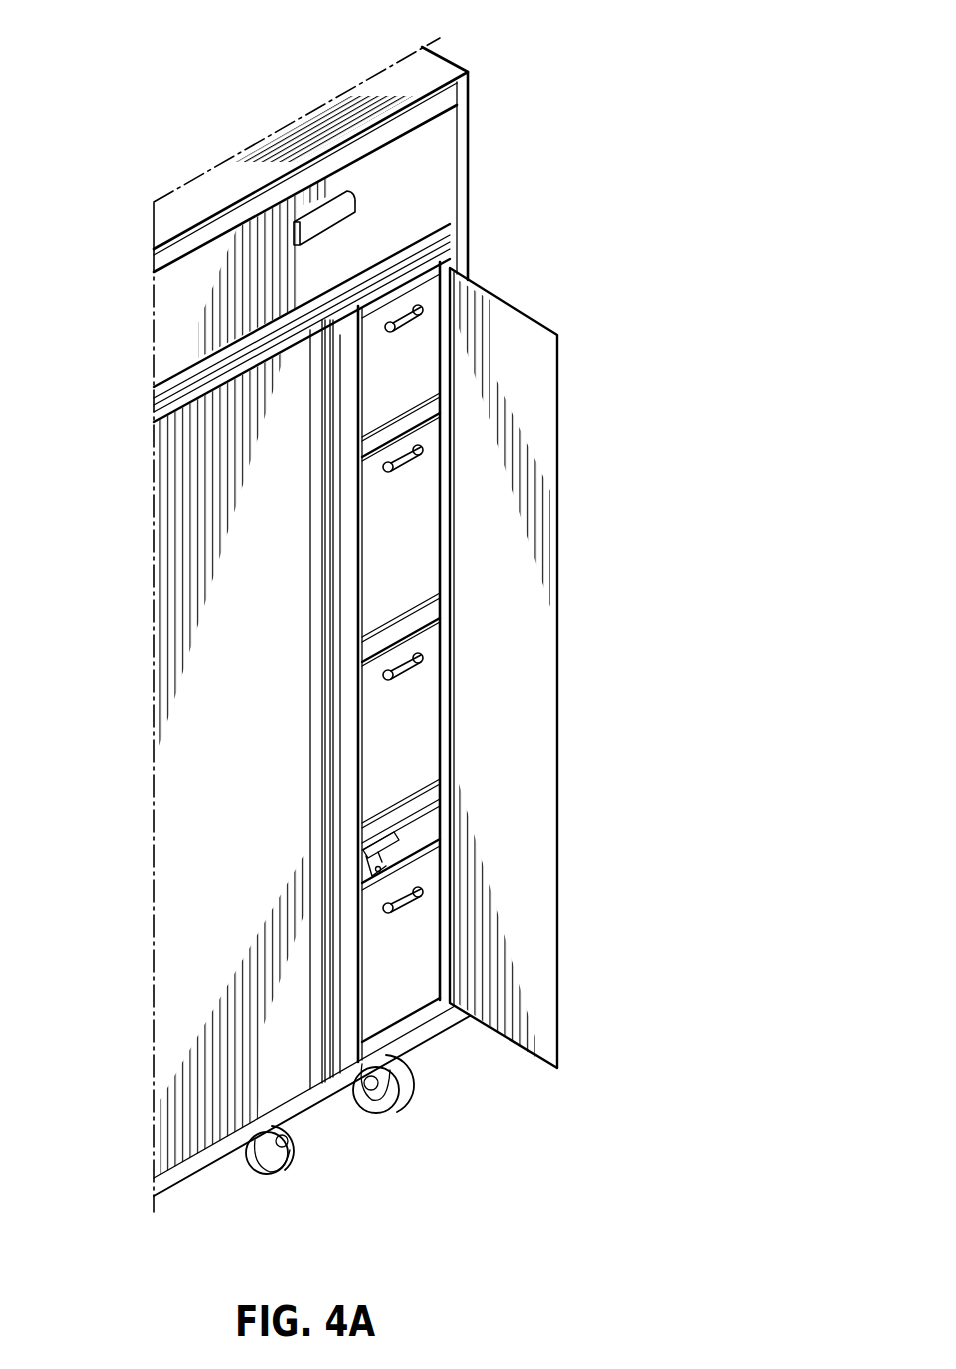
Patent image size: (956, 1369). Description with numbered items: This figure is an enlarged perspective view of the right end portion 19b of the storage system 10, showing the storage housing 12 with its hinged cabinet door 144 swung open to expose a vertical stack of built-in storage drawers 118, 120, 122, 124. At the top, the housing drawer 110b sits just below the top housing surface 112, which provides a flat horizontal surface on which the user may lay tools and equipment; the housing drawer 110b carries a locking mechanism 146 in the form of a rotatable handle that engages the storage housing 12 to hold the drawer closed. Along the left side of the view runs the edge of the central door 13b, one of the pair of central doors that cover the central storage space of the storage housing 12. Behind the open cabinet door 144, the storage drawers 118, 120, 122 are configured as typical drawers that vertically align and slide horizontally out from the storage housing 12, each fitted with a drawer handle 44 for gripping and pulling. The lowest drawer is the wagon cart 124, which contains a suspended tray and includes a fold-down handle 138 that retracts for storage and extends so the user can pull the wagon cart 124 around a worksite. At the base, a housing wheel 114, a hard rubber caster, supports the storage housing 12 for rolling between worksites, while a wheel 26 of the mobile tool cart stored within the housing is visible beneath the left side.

The storage system 10 is at (671, 63).
The storage housing 12 is at (455, 64).
The top housing surface 112 is at (398, 76).
The right end portion 19b is at (399, 36).
The central door 13b is at (160, 824).
The housing drawer 110b is at (442, 173).
The locking mechanism 146 is at (353, 208).
The hinged cabinet door 144 is at (545, 323).
The storage drawer 118 is at (428, 358).
The storage drawer 120 is at (428, 556).
The storage drawer 122 is at (428, 738).
The wagon cart 124 is at (428, 948).
The fold-down handle 138 is at (381, 856).
The drawer handle 44 is at (424, 318).
The housing wheel 114 is at (404, 1100).
The wheel 26 is at (286, 1172).